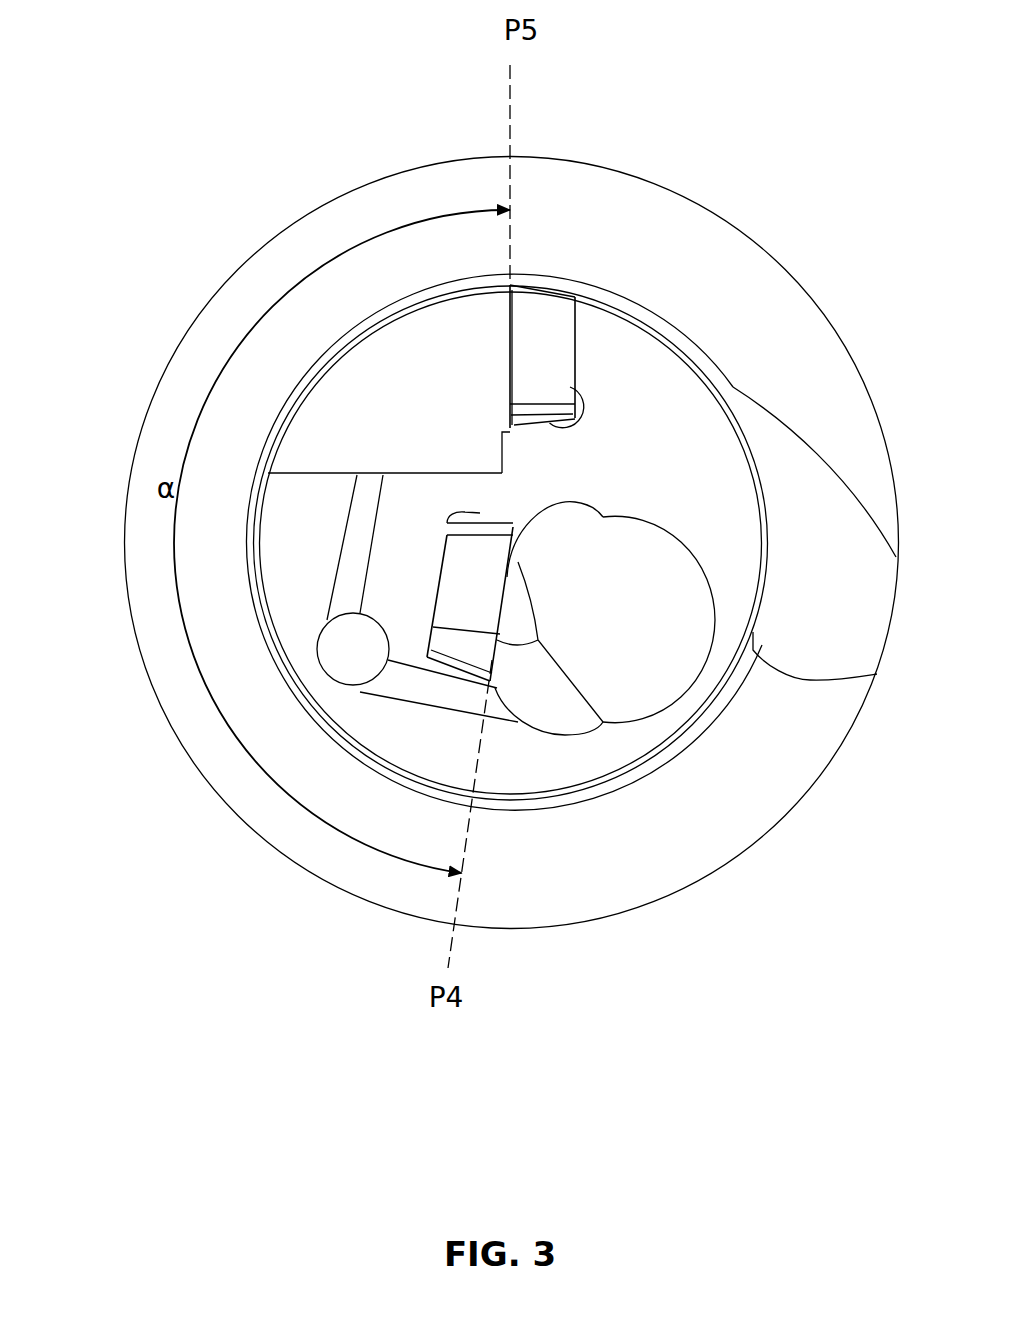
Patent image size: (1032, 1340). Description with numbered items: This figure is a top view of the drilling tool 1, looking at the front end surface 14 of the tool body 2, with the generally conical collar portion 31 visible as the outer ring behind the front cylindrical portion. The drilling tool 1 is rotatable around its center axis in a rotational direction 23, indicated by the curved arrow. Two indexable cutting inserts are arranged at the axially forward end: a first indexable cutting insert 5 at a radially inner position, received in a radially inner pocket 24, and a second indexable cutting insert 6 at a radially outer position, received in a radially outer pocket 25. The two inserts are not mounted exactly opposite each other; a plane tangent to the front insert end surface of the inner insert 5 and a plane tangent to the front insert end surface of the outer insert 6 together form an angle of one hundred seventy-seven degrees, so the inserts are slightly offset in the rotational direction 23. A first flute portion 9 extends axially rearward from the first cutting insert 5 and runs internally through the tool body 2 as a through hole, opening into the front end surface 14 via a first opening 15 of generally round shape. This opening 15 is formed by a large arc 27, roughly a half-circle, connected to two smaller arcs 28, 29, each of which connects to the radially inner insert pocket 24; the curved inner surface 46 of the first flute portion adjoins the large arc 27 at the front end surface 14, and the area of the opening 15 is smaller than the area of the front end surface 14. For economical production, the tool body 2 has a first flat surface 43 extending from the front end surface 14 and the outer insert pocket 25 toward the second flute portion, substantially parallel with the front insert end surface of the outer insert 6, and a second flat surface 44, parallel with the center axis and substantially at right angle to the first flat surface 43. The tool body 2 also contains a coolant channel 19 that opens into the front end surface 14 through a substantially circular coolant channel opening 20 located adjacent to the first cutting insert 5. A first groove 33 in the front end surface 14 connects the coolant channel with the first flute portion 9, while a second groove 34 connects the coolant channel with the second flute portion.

The drilling tool 1 is at (760, 93).
The tool body 2 is at (798, 333).
The first indexable cutting insert 5 is at (460, 607).
The second indexable cutting insert 6 is at (552, 353).
The first flute portion 9 is at (633, 668).
The front end surface 14 is at (628, 455).
The first opening 15 is at (669, 535).
The coolant channel 19 is at (354, 680).
The coolant channel opening 20 is at (320, 644).
The rotational direction 23 is at (72, 382).
The radially inner pocket 24 is at (488, 520).
The radially outer pocket 25 is at (578, 337).
The large arc 27 is at (693, 560).
The smaller arc 28 is at (543, 500).
The smaller arc 29 is at (533, 730).
The collar portion 31 is at (143, 618).
The first groove 33 is at (403, 688).
The second groove 34 is at (355, 527).
The first flat surface 43 is at (497, 443).
The second flat surface 44 is at (303, 473).
The curved inner surface 46 is at (603, 631).